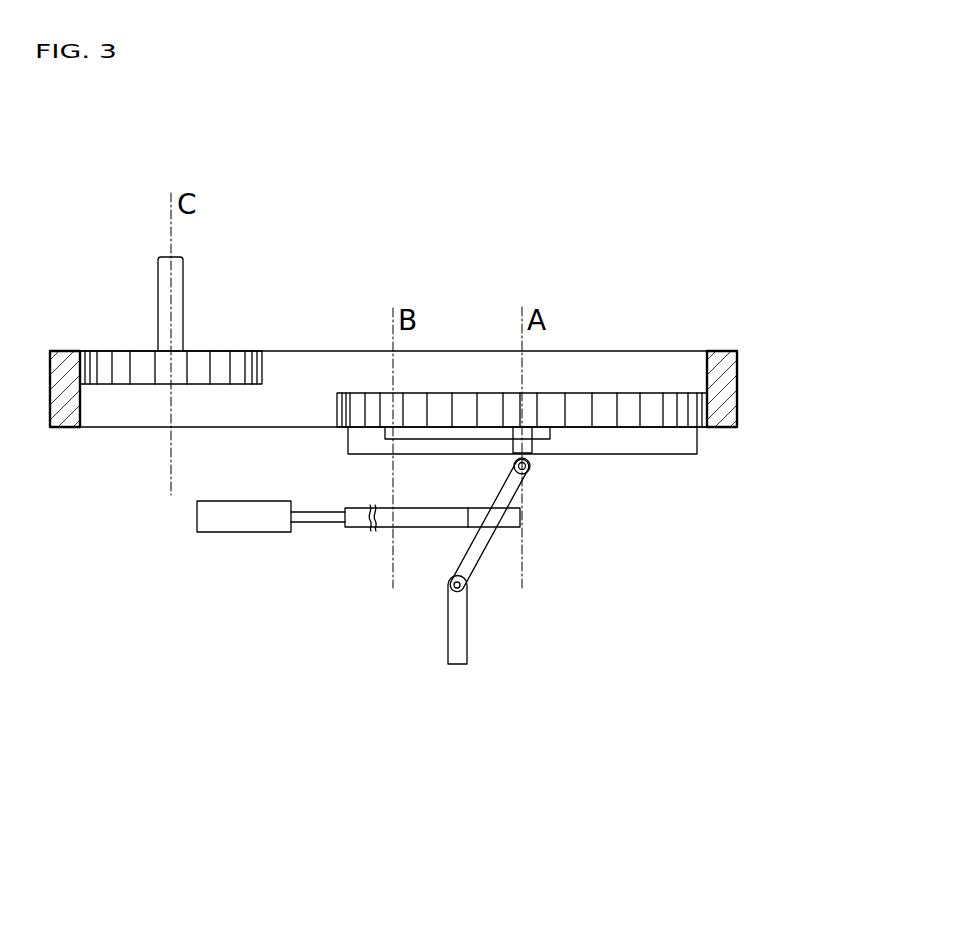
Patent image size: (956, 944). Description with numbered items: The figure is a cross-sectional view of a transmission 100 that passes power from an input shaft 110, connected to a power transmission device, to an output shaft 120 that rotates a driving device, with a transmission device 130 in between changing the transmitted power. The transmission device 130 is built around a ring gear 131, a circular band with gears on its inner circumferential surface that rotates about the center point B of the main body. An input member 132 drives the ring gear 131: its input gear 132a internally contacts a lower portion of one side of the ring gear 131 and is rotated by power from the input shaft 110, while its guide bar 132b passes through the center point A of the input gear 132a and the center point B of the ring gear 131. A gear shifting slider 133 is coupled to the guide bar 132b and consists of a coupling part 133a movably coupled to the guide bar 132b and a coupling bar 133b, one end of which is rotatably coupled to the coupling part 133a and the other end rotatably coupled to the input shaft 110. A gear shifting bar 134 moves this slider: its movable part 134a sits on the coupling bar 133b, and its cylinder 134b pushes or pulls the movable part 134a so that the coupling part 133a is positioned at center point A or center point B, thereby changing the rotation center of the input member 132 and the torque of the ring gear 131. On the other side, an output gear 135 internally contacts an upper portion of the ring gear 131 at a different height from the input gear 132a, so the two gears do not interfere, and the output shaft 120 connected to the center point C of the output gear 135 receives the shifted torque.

The transmission 100 is at (673, 186).
The input shaft 110 is at (467, 622).
The output shaft 120 is at (178, 295).
The transmission device 130 is at (449, 501).
The ring gear 131 is at (722, 390).
The input member 132 is at (534, 344).
The input gear 132a is at (603, 398).
The guide bar 132b is at (667, 438).
The gear shifting slider 133 is at (572, 509).
The coupling part 133a is at (532, 455).
The coupling bar 133b is at (480, 548).
The gear shifting bar 134 is at (358, 586).
The movable part 134a is at (362, 520).
The cylinder 134b is at (243, 523).
The output gear 135 is at (238, 355).